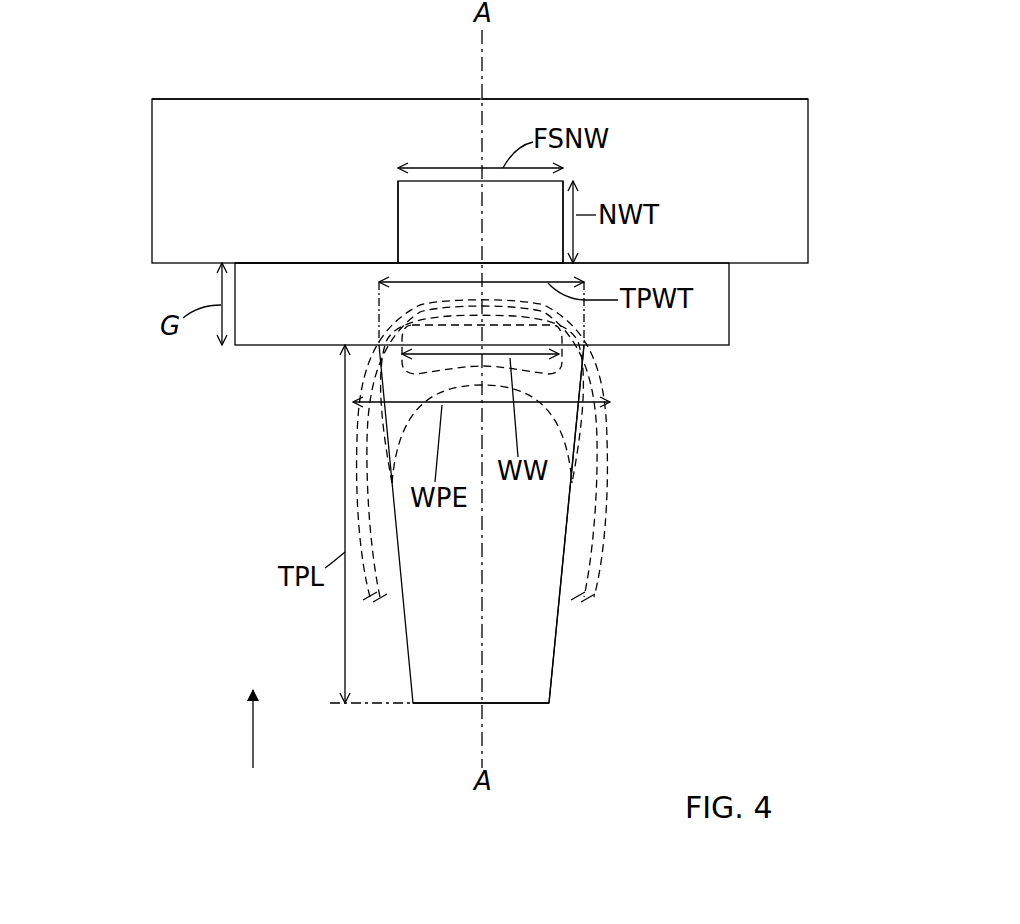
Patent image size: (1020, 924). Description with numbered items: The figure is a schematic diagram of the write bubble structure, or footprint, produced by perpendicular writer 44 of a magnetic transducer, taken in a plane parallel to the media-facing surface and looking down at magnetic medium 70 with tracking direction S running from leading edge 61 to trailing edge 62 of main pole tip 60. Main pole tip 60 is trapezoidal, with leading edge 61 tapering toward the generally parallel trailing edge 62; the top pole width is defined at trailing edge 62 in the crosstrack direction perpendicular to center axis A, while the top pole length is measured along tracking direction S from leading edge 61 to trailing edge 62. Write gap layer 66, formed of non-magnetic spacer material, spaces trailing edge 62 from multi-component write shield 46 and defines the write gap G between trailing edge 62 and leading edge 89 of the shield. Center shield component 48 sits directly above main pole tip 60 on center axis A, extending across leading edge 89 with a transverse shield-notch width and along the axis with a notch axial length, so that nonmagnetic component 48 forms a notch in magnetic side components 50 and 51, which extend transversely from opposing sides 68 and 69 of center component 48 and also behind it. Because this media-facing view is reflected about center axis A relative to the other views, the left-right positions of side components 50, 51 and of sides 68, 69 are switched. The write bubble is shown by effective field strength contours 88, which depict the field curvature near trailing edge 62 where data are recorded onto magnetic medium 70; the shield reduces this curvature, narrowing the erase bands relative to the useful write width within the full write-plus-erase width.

The perpendicular writer 44 is at (775, 518).
The multi-component write shield 46 is at (128, 158).
The center shield component 48 is at (410, 207).
The side shield component 50 is at (704, 116).
The side shield component 51 is at (262, 116).
The main pole tip 60 is at (466, 688).
The leading edge 61 is at (519, 700).
The trailing edge 62 is at (573, 352).
The write gap layer 66 is at (275, 332).
The side of center component 68 is at (560, 214).
The side of center component 69 is at (404, 228).
The magnetic medium 70 is at (241, 734).
The effective field strength contours 88 is at (593, 574).
The leading edge of write shield 89 is at (287, 262).